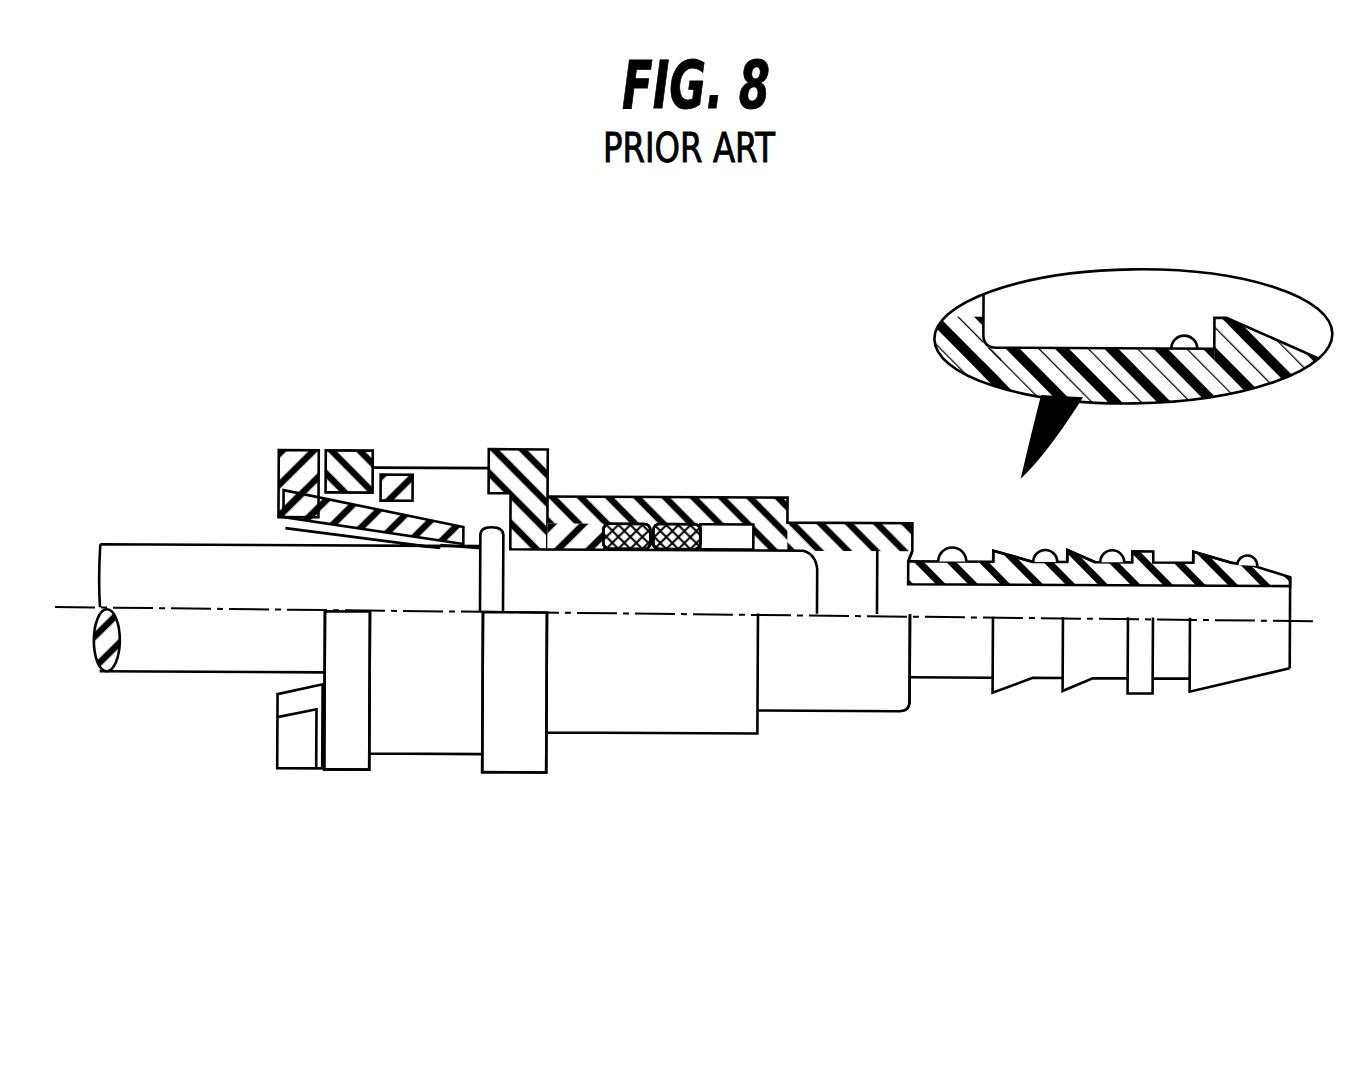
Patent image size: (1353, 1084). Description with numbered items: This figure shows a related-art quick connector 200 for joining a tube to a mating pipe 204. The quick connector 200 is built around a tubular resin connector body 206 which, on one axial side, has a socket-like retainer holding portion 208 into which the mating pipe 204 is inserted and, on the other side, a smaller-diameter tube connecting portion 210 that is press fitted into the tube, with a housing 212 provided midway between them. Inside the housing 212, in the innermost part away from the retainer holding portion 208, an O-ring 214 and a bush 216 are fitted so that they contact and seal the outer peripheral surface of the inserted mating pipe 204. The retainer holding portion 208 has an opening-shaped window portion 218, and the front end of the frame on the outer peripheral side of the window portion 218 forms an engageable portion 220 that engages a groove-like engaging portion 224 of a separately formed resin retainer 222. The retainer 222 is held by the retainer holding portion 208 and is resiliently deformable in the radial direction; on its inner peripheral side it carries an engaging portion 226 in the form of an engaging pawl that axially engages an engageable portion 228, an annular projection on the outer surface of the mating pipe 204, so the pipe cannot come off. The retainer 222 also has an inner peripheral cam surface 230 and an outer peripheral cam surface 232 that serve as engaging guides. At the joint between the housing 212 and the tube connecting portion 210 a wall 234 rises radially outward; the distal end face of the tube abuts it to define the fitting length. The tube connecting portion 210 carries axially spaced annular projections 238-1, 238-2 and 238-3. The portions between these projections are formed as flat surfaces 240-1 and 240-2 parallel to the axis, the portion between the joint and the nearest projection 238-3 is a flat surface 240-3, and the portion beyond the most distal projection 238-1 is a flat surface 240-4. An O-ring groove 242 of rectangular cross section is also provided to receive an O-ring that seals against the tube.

The quick connector 200 is at (870, 319).
The mating pipe 204 is at (155, 677).
The connector body 206 is at (643, 484).
The retainer holding portion 208 is at (523, 438).
The tube connecting portion 210 is at (963, 686).
The housing 212 is at (736, 484).
The O-ring 214 is at (690, 550).
The bush 216 is at (575, 550).
The window portion 218 is at (477, 466).
The engageable portion 220 is at (347, 491).
The retainer 222 is at (293, 440).
The engaging portion 224 is at (334, 507).
The engaging portion 226 is at (452, 545).
The engageable portion 228 is at (460, 525).
The inner peripheral cam surface 230 is at (417, 542).
The outer peripheral cam surface 232 is at (427, 543).
The wall 234 is at (912, 536).
The annular projection 238-1 is at (1193, 544).
The annular projection 238-2 is at (1068, 545).
The annular projection 238-3 is at (993, 545).
The flat surface 240-1 is at (1105, 562).
The flat surface 240-2 is at (1033, 562).
The flat surface 240-3 is at (935, 560).
The flat surface 240-4 is at (1245, 563).
The O-ring groove 242 is at (1180, 683).